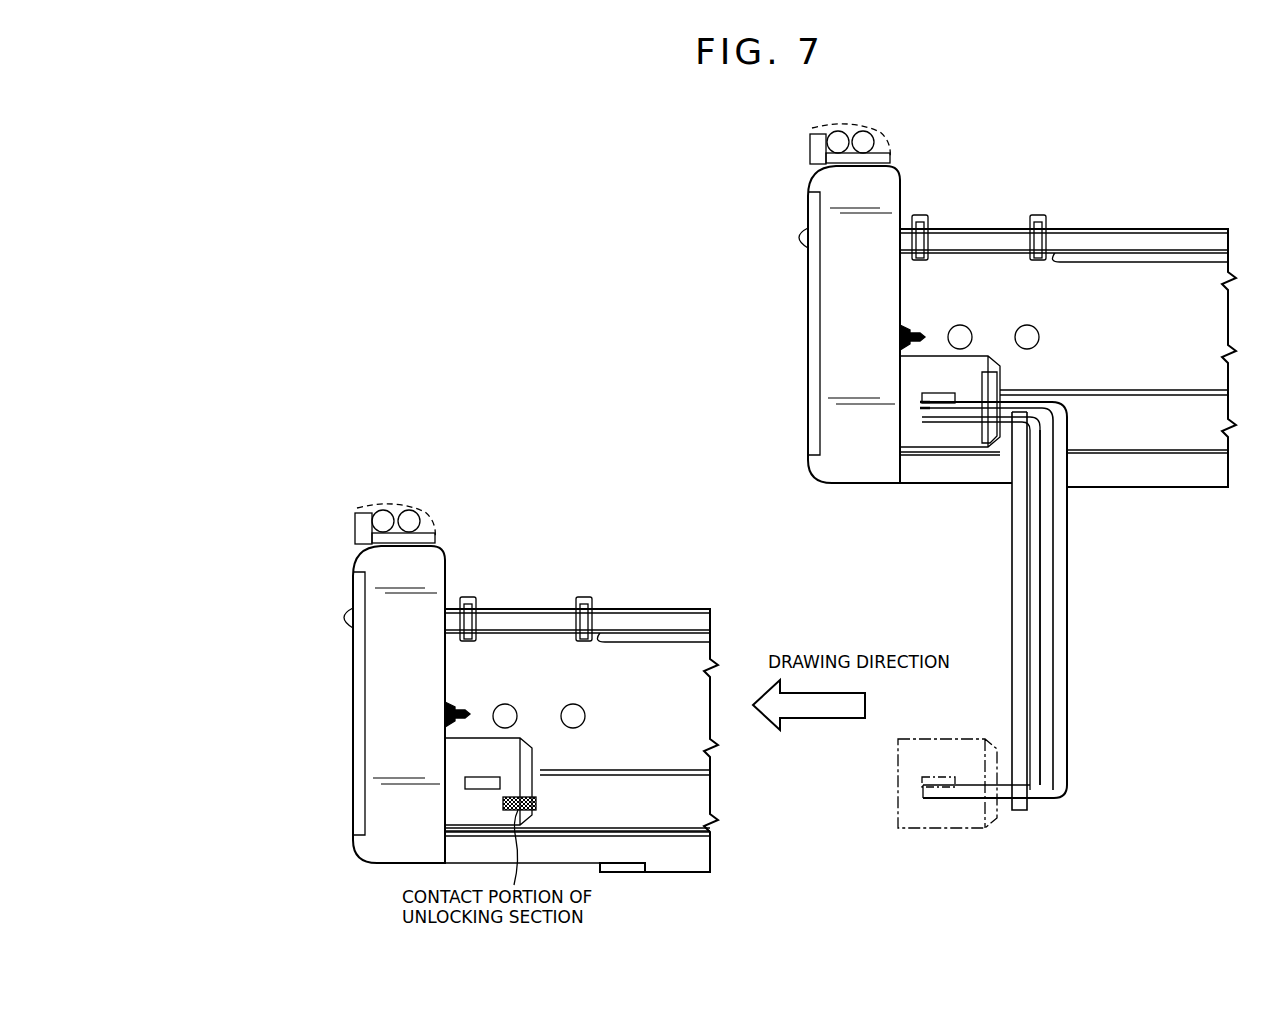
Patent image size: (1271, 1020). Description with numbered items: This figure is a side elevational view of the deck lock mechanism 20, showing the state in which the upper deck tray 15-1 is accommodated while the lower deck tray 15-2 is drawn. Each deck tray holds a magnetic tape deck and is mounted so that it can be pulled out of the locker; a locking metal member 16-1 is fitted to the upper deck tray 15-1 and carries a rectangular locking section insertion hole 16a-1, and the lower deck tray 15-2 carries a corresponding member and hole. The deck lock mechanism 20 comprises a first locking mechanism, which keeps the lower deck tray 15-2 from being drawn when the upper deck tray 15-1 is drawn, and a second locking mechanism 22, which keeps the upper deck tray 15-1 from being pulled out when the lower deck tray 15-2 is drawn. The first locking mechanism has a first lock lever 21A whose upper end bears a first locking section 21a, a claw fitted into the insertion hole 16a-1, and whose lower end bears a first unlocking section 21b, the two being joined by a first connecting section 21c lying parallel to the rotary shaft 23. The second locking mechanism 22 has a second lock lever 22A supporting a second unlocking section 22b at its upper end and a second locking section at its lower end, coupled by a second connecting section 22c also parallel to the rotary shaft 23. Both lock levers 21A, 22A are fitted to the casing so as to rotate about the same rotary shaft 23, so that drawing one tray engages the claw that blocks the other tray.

The upper deck tray 15-1 is at (832, 212).
The lower deck tray 15-2 is at (400, 590).
The locking metal member 16-1 is at (990, 372).
The locking section insertion hole 16a-1 is at (940, 397).
The deck lock mechanism 20 is at (1098, 562).
The first lock lever 21A is at (1060, 567).
The first locking section 21a is at (920, 406).
The first unlocking section 21b is at (960, 812).
The first connecting section 21c is at (1057, 690).
The second locking mechanism 22 is at (981, 601).
The second lock lever 22A is at (1045, 612).
The second unlocking section 22b is at (960, 420).
The second connecting section 22c is at (1045, 655).
The rotary shaft 23 is at (1025, 517).